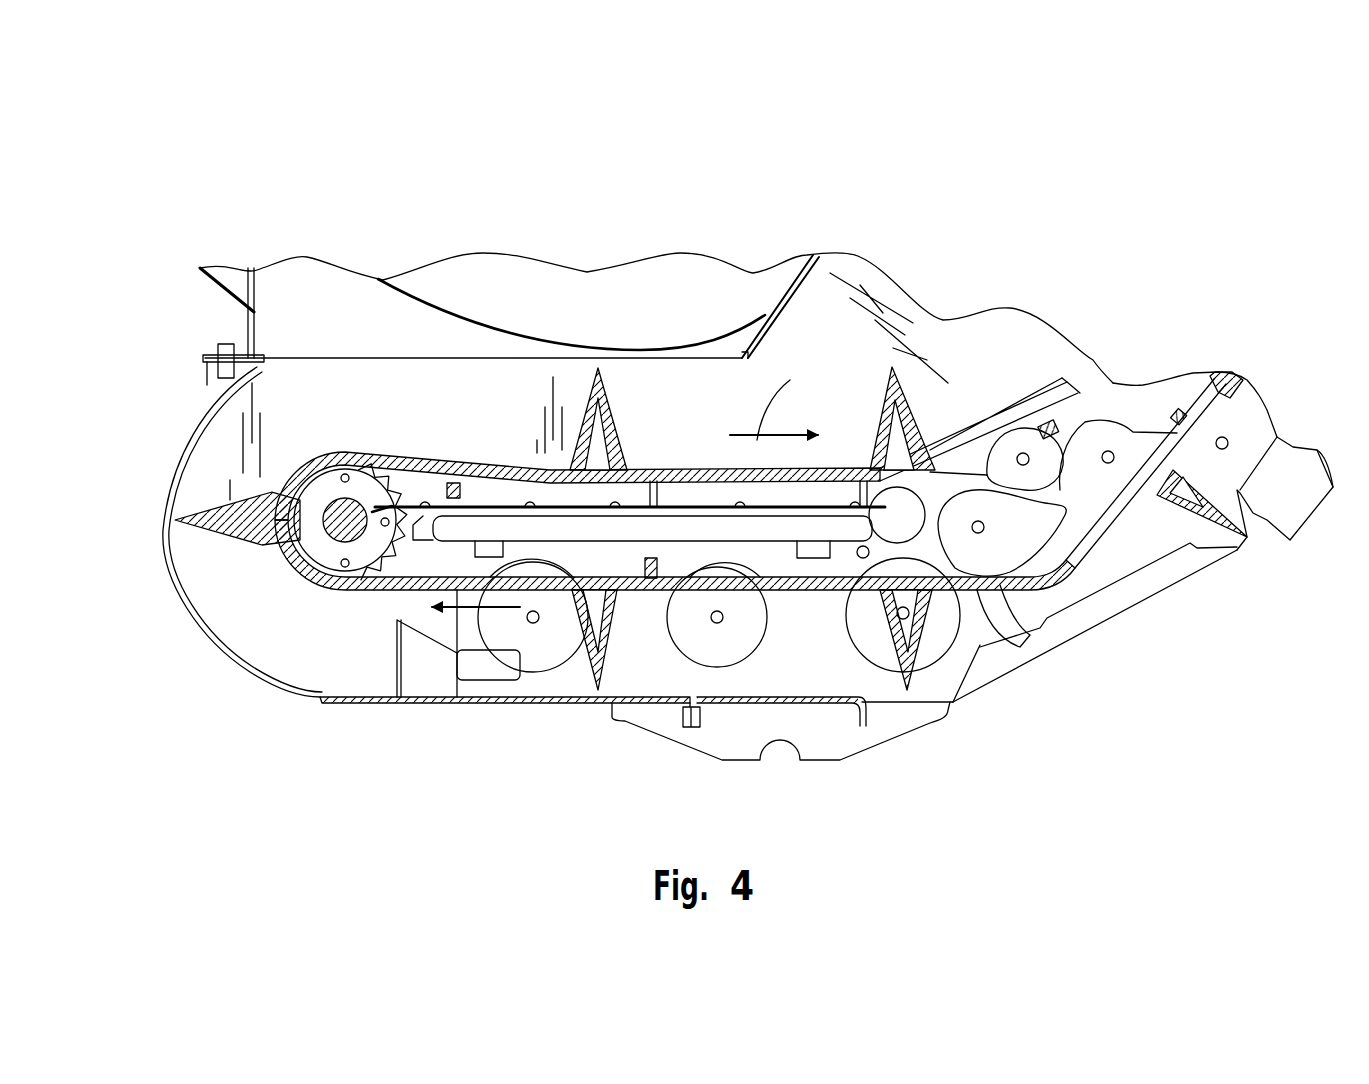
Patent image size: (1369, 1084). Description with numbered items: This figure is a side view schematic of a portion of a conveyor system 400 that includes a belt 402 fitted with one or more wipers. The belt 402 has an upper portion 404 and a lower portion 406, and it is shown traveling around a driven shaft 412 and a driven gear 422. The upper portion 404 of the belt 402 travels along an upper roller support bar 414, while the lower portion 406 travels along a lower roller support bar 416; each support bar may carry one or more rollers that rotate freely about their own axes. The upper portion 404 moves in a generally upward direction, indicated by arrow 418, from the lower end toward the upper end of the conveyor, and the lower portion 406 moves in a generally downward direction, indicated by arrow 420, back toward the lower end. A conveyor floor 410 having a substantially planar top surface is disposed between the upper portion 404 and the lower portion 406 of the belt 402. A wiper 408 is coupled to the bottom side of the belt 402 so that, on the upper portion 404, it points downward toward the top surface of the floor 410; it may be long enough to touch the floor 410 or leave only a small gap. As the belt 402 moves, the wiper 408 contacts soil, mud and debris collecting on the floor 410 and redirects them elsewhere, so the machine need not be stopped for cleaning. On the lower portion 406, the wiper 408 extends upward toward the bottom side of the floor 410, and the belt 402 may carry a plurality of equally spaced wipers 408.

The conveyor system 400 is at (153, 208).
The belt 402 is at (1105, 547).
The upper portion 404 is at (697, 473).
The lower portion 406 is at (997, 592).
The wiper 408 is at (448, 485).
The conveyor floor 410 is at (522, 505).
The driven shaft 412 is at (285, 540).
The upper roller support bar 414 is at (945, 465).
The lower roller support bar 416 is at (547, 653).
The arrow 418 is at (783, 417).
The arrow 420 is at (463, 613).
The driven gear 422 is at (418, 545).